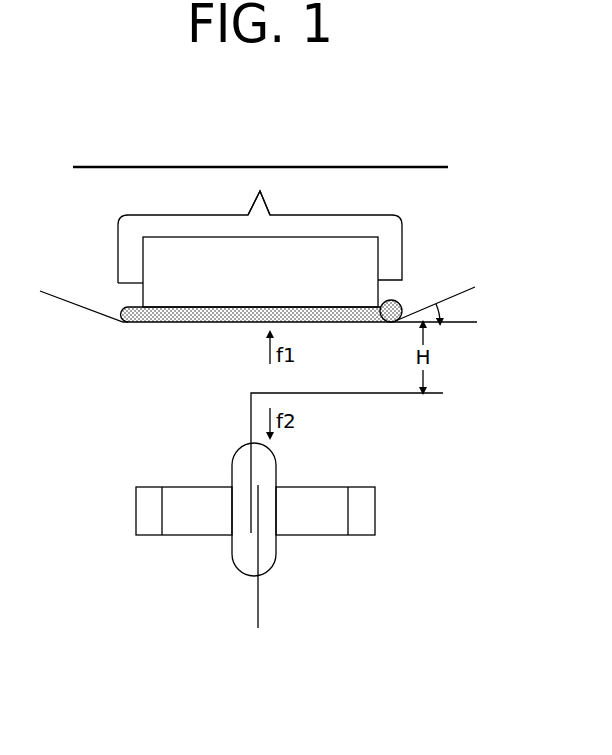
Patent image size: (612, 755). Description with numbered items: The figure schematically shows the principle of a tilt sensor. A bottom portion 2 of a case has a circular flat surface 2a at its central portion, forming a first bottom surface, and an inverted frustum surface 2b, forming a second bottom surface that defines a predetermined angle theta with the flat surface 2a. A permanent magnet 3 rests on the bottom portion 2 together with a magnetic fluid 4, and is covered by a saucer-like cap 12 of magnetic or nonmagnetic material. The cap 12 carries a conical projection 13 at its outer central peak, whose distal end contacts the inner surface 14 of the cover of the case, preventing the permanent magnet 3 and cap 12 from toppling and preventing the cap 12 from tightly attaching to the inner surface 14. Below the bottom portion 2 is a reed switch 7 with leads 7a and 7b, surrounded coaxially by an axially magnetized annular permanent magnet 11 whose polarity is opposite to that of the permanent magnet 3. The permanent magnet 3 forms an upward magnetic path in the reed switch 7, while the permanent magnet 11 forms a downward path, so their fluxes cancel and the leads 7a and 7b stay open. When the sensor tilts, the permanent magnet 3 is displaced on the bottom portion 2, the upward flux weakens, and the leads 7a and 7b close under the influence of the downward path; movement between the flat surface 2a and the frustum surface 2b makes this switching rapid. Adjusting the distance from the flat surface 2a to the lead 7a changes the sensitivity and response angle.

The bottom portion 2 is at (73, 304).
The circular flat surface 2a is at (196, 326).
The inverted frustum surface 2b is at (474, 285).
The permanent magnet 3 is at (370, 247).
The magnetic fluid 4 is at (401, 300).
The reed switch 7 is at (235, 555).
The lead 7a is at (250, 418).
The lead 7b is at (259, 618).
The annular permanent magnet 11 is at (322, 537).
The saucer-like cap 12 is at (377, 224).
The conical projection 13 is at (267, 200).
The inner surface of cover 14 is at (370, 166).